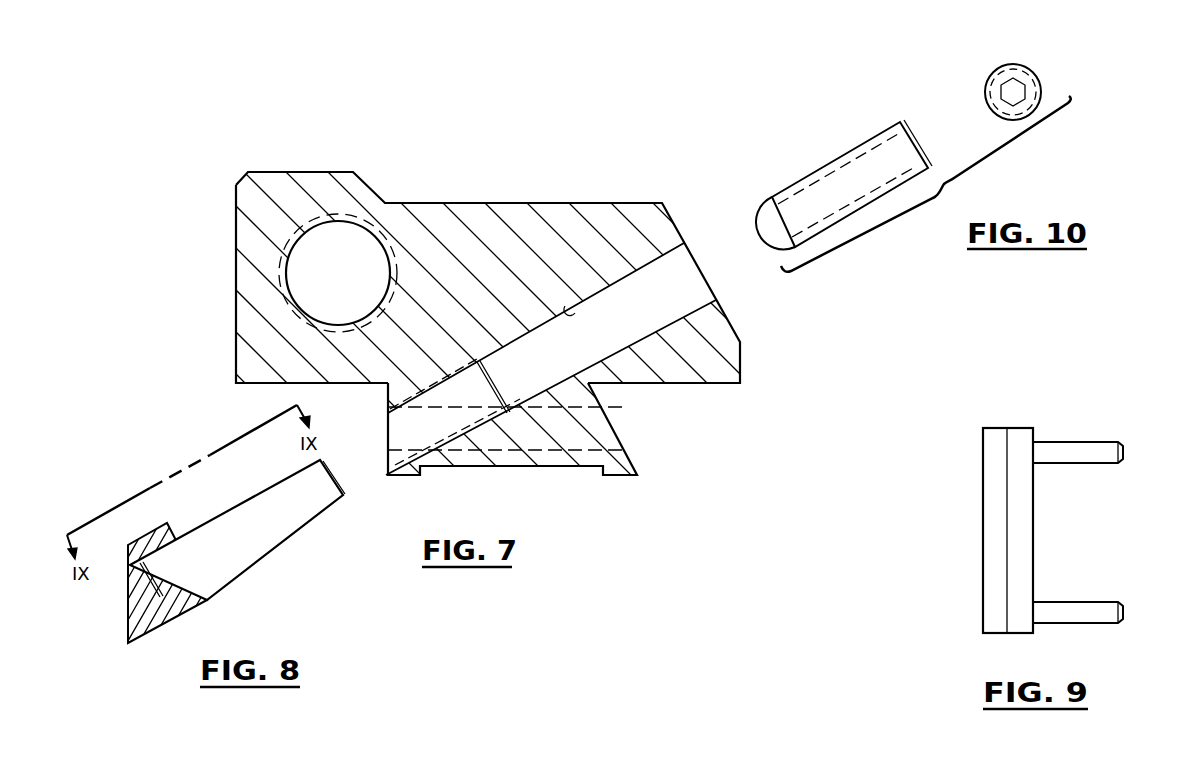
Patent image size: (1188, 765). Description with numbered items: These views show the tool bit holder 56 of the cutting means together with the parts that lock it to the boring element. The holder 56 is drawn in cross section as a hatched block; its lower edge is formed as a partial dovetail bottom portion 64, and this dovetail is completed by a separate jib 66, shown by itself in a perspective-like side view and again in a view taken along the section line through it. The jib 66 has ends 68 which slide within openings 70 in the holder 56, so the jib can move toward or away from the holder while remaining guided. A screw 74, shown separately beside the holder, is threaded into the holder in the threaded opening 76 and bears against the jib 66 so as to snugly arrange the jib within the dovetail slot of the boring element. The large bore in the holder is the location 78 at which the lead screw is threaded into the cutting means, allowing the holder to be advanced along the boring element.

In FIG. 7, the tool bit holder 56 is at (396, 194).
In FIG. 7, the partial dovetail bottom portion 64 is at (636, 464).
In FIG. 8, the jib 66 is at (207, 601).
In FIG. 9, the jib 66 is at (1008, 530).
In FIG. 8, the ends 68 is at (297, 478).
In FIG. 9, the ends 68 is at (1088, 446).
In FIG. 7, the openings 70 is at (543, 391).
In FIG. 10, the screw 74 is at (834, 158).
In FIG. 7, the threaded opening 76 is at (572, 304).
In FIG. 7, the threaded connection of lead screw to cutting means 78 is at (287, 275).